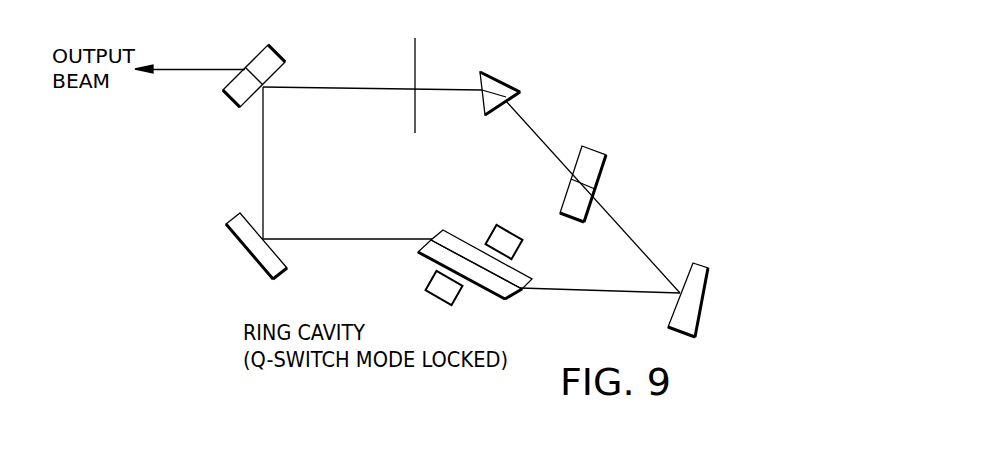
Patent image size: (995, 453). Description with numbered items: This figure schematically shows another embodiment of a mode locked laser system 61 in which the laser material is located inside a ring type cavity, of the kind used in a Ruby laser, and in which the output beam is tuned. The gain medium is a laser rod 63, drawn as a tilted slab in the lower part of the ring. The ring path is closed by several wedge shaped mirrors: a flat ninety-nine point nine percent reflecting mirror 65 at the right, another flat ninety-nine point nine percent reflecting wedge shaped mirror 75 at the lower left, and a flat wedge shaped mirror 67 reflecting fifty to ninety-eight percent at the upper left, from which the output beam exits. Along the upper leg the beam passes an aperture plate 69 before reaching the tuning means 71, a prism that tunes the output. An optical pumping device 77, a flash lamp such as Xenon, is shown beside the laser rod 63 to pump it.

The mode locked laser system 61 is at (216, 162).
The laser rod 63 is at (456, 230).
The flat wedge shaped 99.9% reflecting mirror 65 is at (700, 317).
The flat 50% to 98% reflecting wedge shaped mirror 67 is at (259, 59).
The aperture plate 69 is at (414, 53).
The tuning means 71 is at (610, 174).
The flat 99.9% reflecting wedge shaped mirror 75 is at (240, 247).
The optical pumping device 77 is at (513, 256).